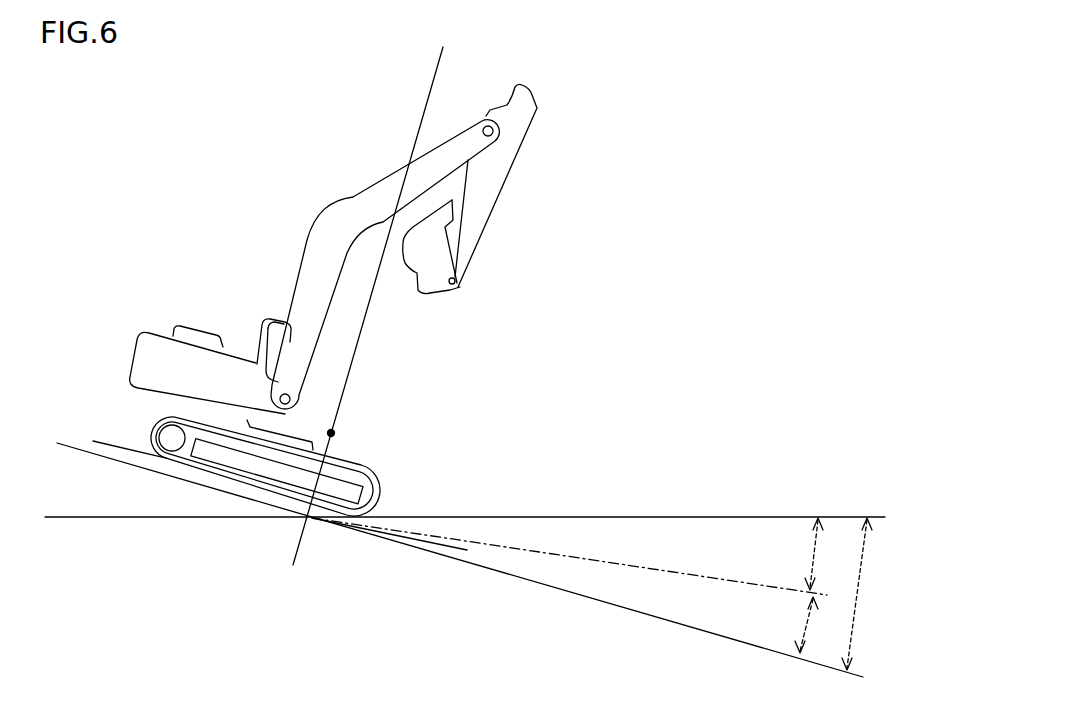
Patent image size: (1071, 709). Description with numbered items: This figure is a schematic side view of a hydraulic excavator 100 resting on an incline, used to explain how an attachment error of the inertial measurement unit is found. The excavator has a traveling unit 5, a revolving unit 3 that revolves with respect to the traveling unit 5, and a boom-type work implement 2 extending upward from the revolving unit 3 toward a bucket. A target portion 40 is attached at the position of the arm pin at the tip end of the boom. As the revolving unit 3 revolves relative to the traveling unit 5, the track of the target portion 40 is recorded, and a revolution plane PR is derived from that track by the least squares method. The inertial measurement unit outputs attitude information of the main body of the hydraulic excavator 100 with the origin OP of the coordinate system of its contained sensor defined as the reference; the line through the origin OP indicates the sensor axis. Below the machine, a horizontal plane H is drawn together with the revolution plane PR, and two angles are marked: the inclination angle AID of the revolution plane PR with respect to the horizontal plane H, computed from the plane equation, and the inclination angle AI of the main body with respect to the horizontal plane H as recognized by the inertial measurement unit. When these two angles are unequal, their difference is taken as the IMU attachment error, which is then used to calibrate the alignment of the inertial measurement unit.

The hydraulic excavator 100 is at (180, 258).
The work implement (boom/arm) 2 is at (352, 215).
The revolving unit 3 is at (145, 358).
The traveling unit 5 is at (147, 429).
The target portion 40 is at (487, 113).
The origin OP is at (336, 433).
The horizontal plane H is at (638, 515).
The revolution plane PR is at (627, 607).
The inclination angle AI is at (825, 554).
The inclination angle AID is at (873, 594).